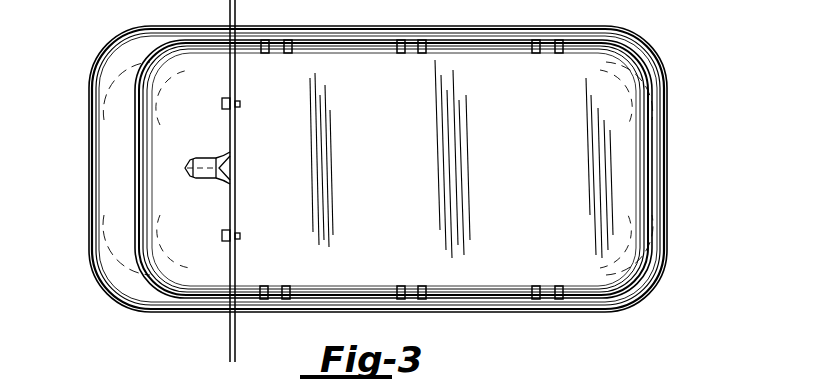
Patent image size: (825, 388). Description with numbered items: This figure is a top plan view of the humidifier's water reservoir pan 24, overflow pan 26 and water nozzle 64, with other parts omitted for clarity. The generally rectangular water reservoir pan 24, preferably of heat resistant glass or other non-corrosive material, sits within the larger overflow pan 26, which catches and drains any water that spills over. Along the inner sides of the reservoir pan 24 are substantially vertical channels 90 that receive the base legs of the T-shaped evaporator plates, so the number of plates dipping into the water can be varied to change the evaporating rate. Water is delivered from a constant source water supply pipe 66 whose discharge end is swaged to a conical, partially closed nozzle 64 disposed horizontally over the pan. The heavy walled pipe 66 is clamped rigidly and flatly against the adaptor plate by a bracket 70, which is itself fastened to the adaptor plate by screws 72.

The water reservoir pan 24 is at (354, 46).
The overflow pan 26 is at (89, 180).
The nozzle 64 is at (197, 179).
The water supply pipe 66 is at (206, 162).
The bracket 70 is at (230, 274).
The screws 72 is at (222, 103).
The vertical channels 90 is at (272, 54).